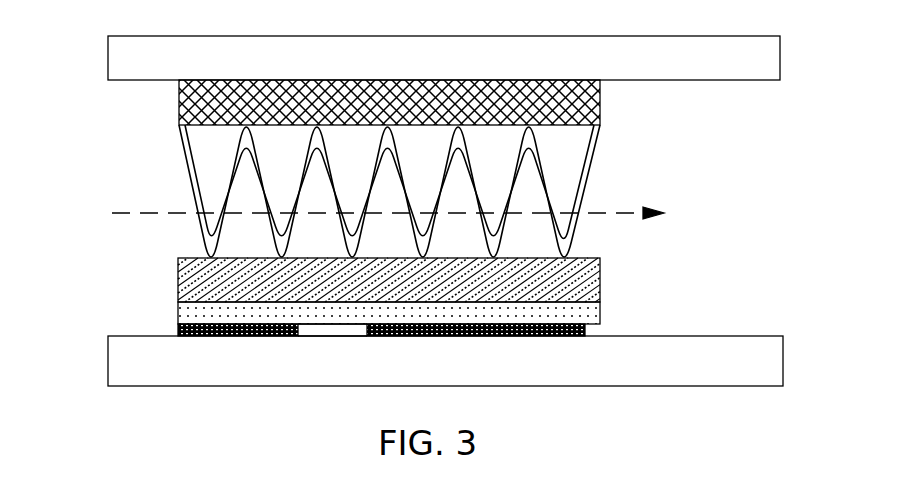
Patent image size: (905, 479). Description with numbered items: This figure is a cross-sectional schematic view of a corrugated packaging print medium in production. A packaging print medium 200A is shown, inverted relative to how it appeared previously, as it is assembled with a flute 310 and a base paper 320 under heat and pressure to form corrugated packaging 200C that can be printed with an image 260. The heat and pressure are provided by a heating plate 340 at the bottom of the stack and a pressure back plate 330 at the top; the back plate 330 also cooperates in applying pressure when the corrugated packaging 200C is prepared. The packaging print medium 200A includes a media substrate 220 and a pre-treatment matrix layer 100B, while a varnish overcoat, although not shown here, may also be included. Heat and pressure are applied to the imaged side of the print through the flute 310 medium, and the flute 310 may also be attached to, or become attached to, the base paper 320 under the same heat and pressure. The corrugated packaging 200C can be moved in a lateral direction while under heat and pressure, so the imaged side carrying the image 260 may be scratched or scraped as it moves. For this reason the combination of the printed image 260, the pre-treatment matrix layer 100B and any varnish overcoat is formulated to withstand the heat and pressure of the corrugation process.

The pressure back plate 330 is at (465, 68).
The heating plate 340 is at (424, 372).
The base paper 320 is at (186, 100).
The flute 310 is at (190, 194).
The media substrate 220 is at (178, 282).
The pre-treatment matrix layer 100B is at (178, 312).
The image 260 is at (178, 333).
The packaging print medium 200A is at (367, 285).
The corrugated packaging 200C is at (416, 211).